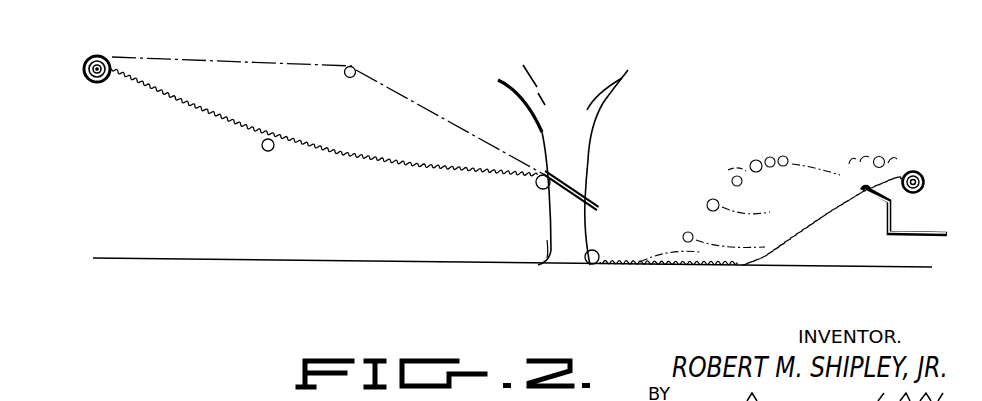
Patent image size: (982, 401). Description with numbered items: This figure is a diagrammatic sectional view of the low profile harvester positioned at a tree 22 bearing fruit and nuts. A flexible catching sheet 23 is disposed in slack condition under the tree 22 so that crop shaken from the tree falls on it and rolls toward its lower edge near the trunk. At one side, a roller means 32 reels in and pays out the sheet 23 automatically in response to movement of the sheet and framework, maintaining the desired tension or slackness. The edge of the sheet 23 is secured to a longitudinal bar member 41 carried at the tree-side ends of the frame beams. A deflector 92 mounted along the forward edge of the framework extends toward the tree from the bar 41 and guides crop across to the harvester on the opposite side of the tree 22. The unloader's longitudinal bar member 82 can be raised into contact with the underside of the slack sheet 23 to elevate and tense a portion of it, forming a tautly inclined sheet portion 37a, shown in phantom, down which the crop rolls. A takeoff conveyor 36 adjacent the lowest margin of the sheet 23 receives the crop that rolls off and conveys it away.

The tree 22 is at (595, 123).
The flexible catching sheet 23 is at (340, 152).
The roller means 32 is at (97, 55).
The takeoff conveyor 36 is at (880, 230).
The tautly inclined sheet portion 37a is at (428, 110).
The longitudinal bar member 41 is at (537, 188).
The longitudinal bar member 82 is at (347, 80).
The deflector 92 is at (576, 188).